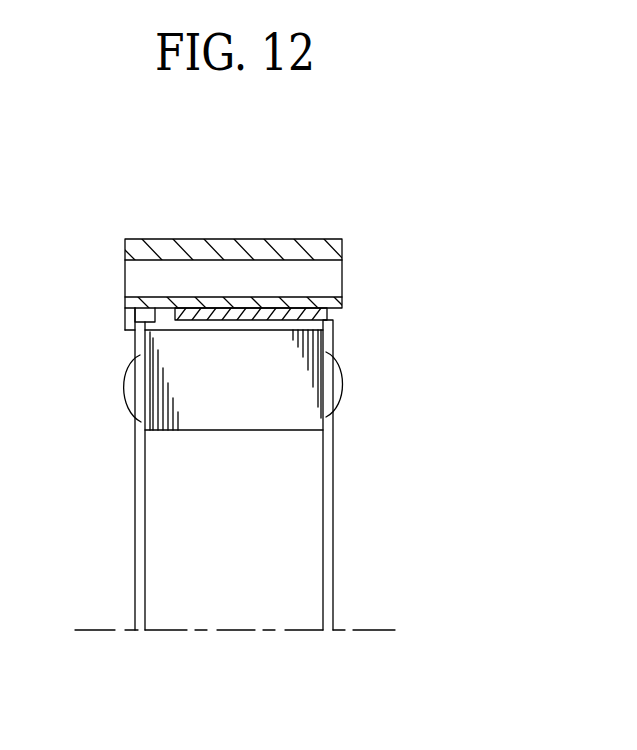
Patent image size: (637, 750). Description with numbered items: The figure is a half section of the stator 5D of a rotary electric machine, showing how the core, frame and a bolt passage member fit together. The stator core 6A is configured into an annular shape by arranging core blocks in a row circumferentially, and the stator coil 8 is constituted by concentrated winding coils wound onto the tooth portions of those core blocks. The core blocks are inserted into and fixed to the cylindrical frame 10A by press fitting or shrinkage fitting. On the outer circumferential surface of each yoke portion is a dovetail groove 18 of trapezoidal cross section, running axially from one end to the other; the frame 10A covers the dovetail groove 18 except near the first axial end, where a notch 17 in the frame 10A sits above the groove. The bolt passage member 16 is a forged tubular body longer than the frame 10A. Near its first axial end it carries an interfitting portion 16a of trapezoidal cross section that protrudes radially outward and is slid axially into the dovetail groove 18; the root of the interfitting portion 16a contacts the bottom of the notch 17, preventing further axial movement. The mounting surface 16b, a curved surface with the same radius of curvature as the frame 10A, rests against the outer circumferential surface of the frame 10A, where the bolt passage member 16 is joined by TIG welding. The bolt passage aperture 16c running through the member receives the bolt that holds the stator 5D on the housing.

The stator 5D is at (67, 138).
The bolt passage member 16 is at (268, 230).
The interfitting portion 16a is at (160, 318).
The mounting surface 16b is at (292, 314).
The bolt passage aperture 16c is at (237, 268).
The notch 17 is at (143, 316).
The dovetail groove 18 is at (198, 322).
The frame 10A is at (338, 315).
The stator core 6A is at (323, 352).
The stator coil 8 is at (349, 388).